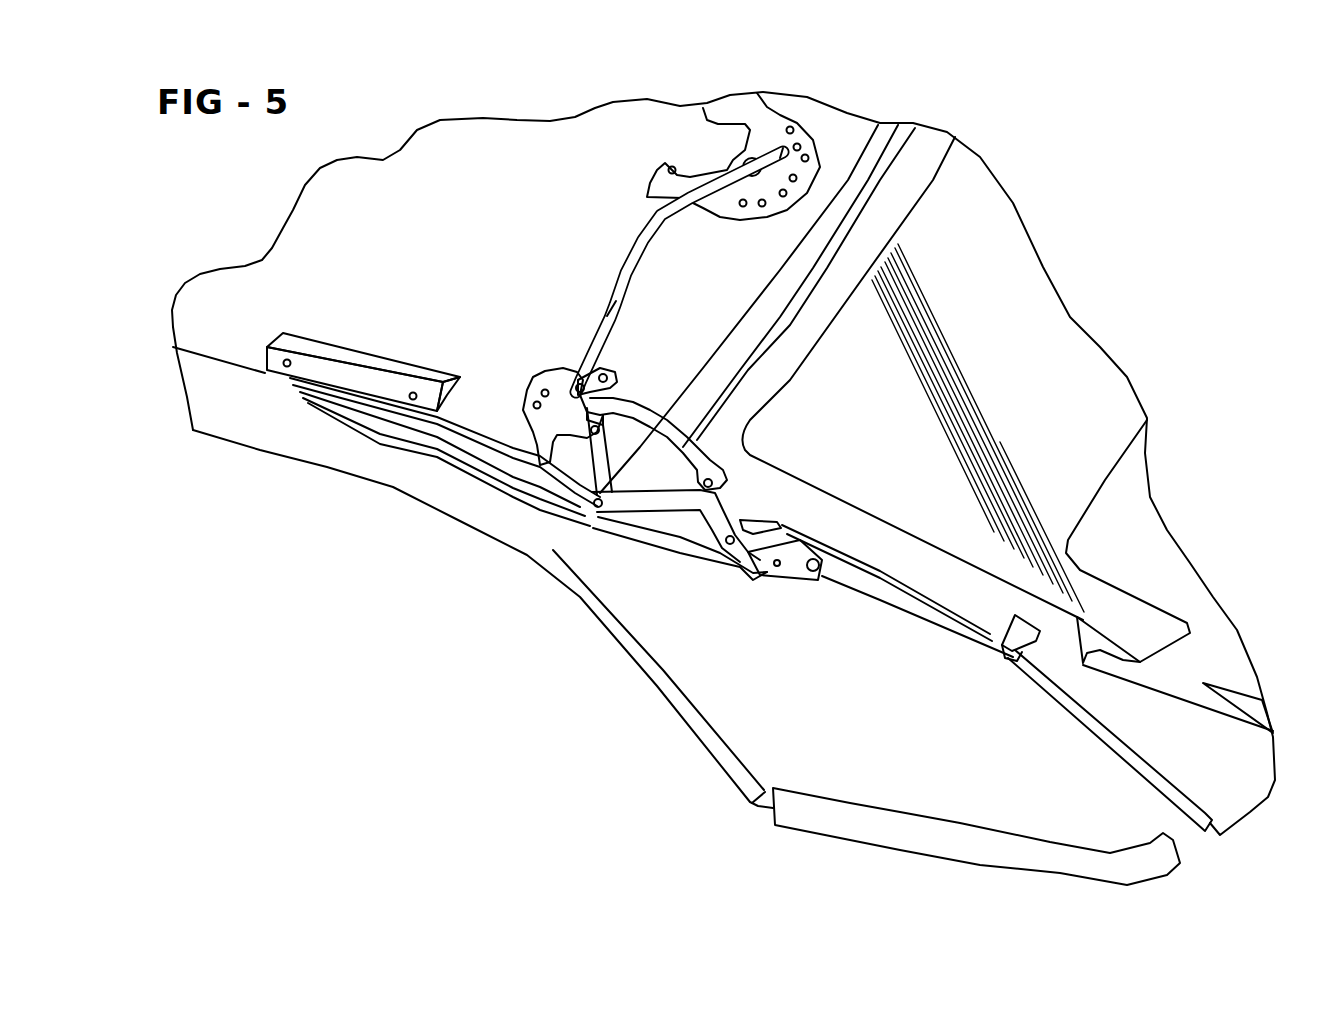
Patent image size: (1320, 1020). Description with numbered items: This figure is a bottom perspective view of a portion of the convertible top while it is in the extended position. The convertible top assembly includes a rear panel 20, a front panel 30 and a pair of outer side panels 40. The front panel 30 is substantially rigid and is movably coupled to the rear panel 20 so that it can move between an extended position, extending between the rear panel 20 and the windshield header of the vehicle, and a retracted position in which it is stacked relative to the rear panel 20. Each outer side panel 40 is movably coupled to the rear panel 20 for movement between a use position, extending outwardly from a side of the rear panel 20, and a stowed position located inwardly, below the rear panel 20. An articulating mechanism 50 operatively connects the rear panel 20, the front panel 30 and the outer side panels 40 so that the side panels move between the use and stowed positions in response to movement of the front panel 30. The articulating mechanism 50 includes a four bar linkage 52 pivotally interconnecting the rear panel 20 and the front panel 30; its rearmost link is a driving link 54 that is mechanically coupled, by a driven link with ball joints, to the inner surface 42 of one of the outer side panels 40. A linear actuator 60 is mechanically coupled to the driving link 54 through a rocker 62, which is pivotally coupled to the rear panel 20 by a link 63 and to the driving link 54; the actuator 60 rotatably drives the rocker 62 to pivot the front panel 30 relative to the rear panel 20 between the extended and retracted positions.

The rear panel 20 is at (1130, 523).
The front panel 30 is at (250, 427).
The outer side panel 40 is at (732, 714).
The inner surface 42 is at (862, 760).
The articulating mechanism 50 is at (510, 525).
The four bar linkage 52 is at (480, 442).
The driving link 54 is at (657, 537).
The actuator 60 is at (917, 613).
The rocker 62 is at (793, 567).
The link 63 is at (800, 530).